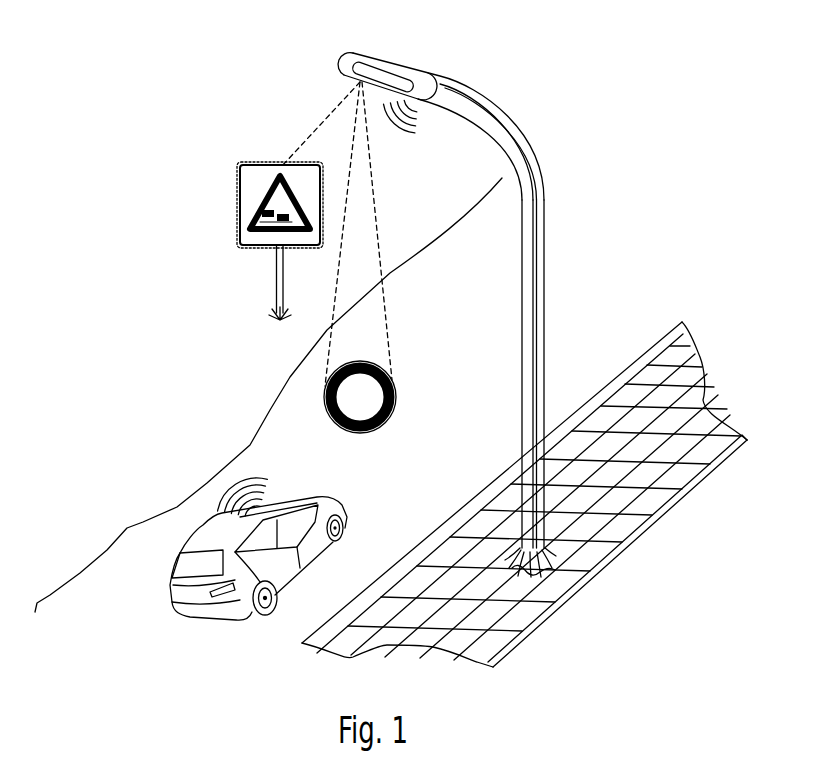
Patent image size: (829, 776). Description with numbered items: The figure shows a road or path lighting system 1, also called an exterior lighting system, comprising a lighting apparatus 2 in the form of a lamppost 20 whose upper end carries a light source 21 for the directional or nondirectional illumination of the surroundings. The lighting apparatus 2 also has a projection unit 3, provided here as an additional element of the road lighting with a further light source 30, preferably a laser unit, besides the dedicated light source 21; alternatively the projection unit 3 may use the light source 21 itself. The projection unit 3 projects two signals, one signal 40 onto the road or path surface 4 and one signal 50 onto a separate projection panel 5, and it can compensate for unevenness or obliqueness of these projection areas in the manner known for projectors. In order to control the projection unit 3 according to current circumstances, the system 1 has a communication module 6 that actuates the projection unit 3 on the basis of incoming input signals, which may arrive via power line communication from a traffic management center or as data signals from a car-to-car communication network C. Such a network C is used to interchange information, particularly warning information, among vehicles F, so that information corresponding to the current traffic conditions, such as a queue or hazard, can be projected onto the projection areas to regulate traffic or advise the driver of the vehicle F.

The road or path lighting system 1 is at (648, 133).
The lighting apparatus 2 is at (527, 130).
The lamppost 20 is at (551, 297).
The communication module 6 is at (451, 82).
The projection unit 3 is at (347, 54).
The further light source 30 is at (349, 203).
The light source 21 is at (386, 82).
The projection panel 5 is at (250, 192).
The signal 50 is at (265, 175).
The signal 40 is at (393, 424).
The road or path surface 4 is at (270, 405).
The vehicle F is at (207, 543).
The car-to-car communication network C is at (213, 506).